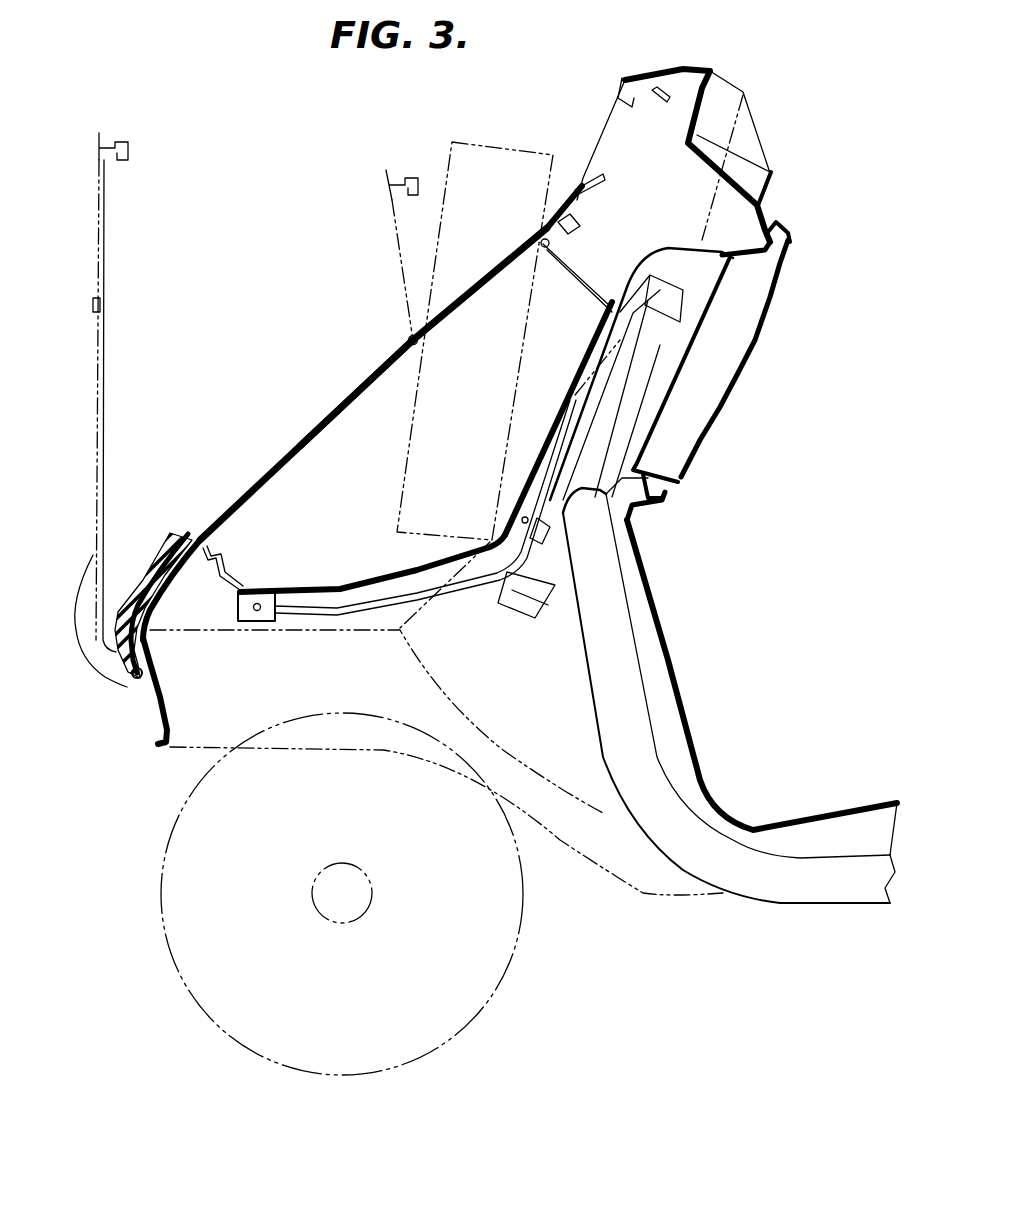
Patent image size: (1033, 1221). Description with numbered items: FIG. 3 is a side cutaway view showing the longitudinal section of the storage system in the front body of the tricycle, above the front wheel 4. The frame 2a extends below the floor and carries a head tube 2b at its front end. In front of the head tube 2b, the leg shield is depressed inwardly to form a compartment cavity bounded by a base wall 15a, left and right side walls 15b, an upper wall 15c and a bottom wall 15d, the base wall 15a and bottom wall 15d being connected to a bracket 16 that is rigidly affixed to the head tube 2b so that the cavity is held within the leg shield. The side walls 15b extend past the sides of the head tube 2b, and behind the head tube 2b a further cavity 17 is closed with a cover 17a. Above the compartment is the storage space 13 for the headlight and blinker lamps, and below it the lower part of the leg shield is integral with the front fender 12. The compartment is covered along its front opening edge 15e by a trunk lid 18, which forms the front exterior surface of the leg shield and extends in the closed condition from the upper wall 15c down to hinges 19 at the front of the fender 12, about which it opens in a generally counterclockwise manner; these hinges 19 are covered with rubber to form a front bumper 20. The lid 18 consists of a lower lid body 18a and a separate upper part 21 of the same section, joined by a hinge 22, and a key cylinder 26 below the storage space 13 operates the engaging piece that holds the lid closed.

The frame 2a is at (640, 737).
The head tube 2b is at (613, 423).
The front wheel 4 is at (493, 993).
The front fender 12 is at (155, 740).
The storage space 13 is at (660, 72).
The base wall 15a is at (553, 415).
The side wall 15b is at (363, 420).
The upper wall 15c is at (585, 277).
The bottom wall 15d is at (344, 586).
The front opening edge 15e is at (208, 557).
The bracket 16 is at (479, 562).
The cavity 17 is at (727, 347).
The cover 17a is at (772, 297).
The trunk lid 18 is at (297, 436).
The lid body 18a is at (253, 490).
The hinge 19 is at (138, 683).
The front bumper 20 is at (150, 557).
The upper part 21 is at (483, 277).
The hinge 22 is at (408, 337).
The key cylinder 26 is at (590, 195).